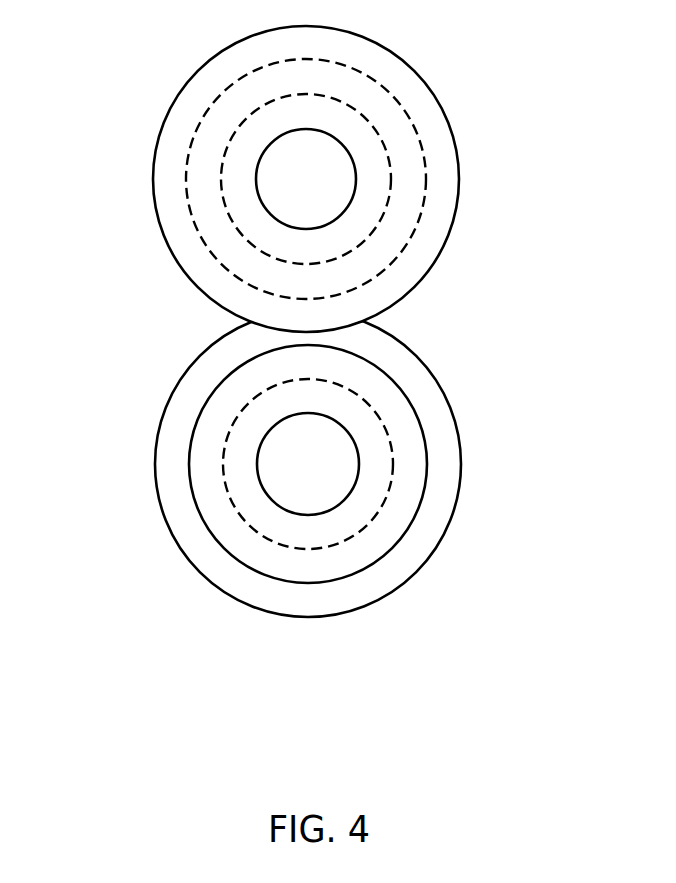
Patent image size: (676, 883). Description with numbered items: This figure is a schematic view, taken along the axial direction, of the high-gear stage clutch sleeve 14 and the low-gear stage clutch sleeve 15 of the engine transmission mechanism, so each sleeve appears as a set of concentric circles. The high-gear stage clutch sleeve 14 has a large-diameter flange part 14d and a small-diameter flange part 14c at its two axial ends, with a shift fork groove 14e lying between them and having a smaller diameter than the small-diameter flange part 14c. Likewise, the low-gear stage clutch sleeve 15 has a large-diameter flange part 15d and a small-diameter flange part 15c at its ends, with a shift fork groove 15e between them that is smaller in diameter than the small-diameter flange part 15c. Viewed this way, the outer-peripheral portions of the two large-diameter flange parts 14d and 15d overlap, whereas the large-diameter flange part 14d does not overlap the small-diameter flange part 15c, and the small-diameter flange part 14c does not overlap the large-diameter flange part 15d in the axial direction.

The high-gear stage clutch sleeve 14 is at (308, 173).
The small-diameter flange part 14c is at (196, 139).
The large-diameter flange part 14d is at (204, 65).
The shift fork groove 14e is at (394, 182).
The low-gear stage clutch sleeve 15 is at (299, 486).
The small-diameter flange part 15c is at (382, 563).
The large-diameter flange part 15d is at (217, 590).
The shift fork groove 15e is at (236, 512).